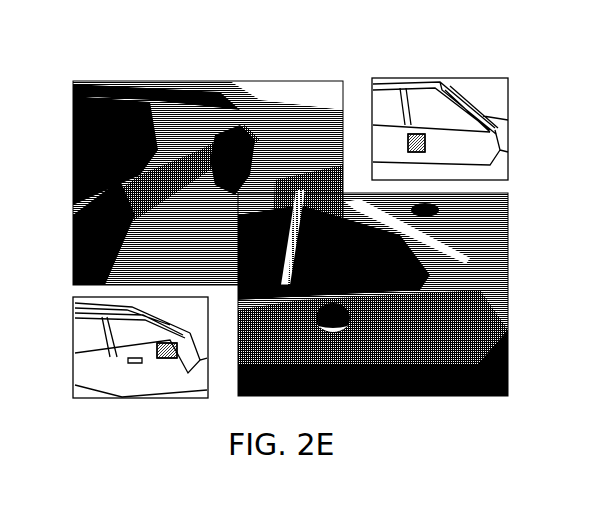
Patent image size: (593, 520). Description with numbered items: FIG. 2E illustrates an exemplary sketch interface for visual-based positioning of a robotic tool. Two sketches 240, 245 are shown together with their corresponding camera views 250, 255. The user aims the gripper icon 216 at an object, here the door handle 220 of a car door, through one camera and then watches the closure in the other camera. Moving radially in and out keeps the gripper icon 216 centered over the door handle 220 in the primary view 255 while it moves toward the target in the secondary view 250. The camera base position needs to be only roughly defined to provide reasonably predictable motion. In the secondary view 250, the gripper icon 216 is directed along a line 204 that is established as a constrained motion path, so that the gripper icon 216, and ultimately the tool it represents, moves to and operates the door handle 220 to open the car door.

The secondary view 250 is at (198, 81).
The primary view 255 is at (422, 396).
The sketch 245 is at (436, 78).
The sketch 240 is at (125, 398).
The door handle 220 is at (187, 195).
The line 204 is at (214, 188).
The gripper icon 216 is at (250, 185).